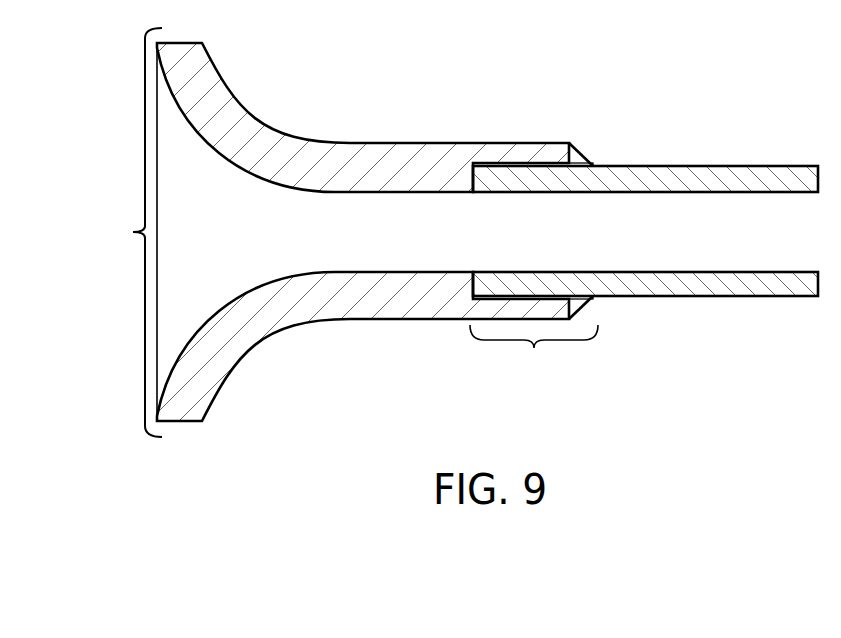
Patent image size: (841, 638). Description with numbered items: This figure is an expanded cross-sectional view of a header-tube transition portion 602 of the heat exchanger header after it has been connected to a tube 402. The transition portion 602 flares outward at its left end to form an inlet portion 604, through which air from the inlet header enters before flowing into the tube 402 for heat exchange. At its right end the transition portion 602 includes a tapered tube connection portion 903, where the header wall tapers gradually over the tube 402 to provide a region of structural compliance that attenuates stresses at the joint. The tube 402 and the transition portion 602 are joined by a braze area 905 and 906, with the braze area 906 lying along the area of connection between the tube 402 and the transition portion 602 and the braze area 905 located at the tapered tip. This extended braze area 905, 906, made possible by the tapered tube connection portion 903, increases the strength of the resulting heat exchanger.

The header-tube transition portion 602 is at (327, 123).
The inlet portion 604 is at (117, 232).
The tube 402 is at (741, 285).
The braze area 906 is at (515, 294).
The braze area 905 is at (577, 303).
The tapered tube connection portion 903 is at (534, 356).